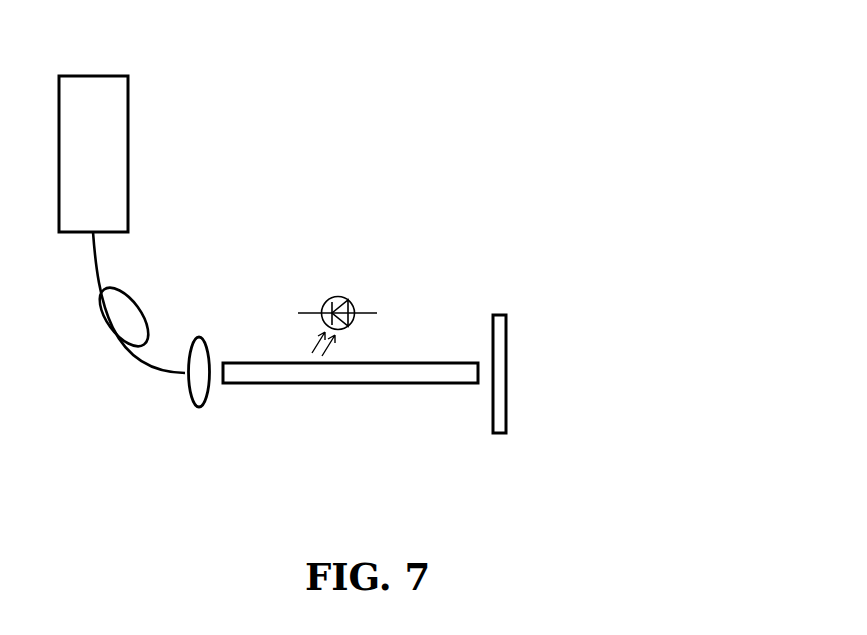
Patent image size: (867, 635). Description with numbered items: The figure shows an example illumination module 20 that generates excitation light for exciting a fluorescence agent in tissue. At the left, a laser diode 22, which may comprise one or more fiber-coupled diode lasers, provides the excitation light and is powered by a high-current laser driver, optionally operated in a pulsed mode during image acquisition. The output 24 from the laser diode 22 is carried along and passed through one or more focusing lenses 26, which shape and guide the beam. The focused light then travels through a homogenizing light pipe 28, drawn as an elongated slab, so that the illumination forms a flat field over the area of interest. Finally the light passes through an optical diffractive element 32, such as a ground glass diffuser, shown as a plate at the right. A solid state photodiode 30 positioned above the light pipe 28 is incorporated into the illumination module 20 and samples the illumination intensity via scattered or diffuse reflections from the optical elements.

The illumination module 20 is at (523, 57).
The laser diode 22 is at (129, 139).
The output 24 is at (92, 252).
The focusing lenses 26 is at (188, 393).
The homogenizing light pipe 28 is at (295, 385).
The solid state photodiode 30 is at (343, 297).
The optical diffractive element 32 is at (506, 357).